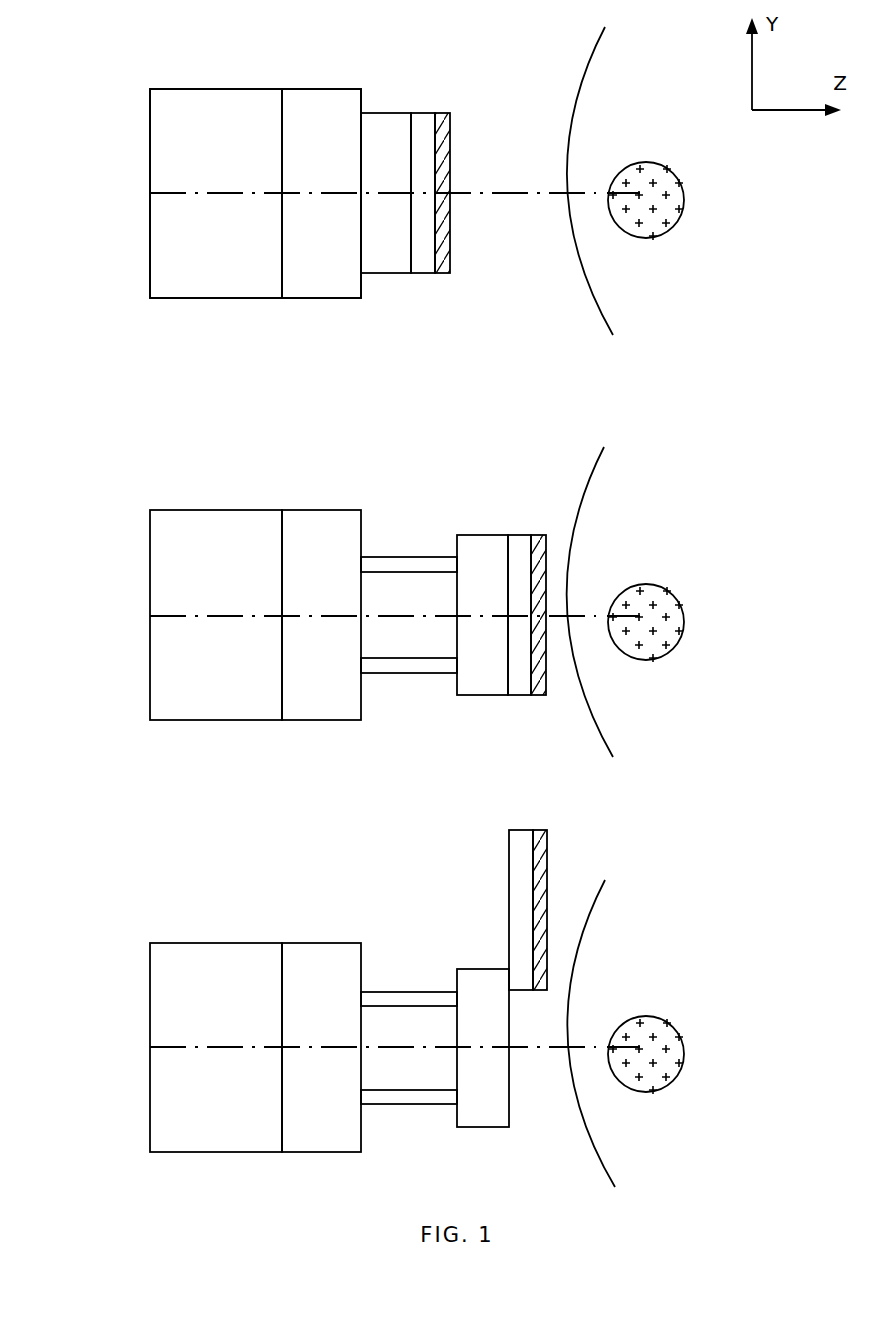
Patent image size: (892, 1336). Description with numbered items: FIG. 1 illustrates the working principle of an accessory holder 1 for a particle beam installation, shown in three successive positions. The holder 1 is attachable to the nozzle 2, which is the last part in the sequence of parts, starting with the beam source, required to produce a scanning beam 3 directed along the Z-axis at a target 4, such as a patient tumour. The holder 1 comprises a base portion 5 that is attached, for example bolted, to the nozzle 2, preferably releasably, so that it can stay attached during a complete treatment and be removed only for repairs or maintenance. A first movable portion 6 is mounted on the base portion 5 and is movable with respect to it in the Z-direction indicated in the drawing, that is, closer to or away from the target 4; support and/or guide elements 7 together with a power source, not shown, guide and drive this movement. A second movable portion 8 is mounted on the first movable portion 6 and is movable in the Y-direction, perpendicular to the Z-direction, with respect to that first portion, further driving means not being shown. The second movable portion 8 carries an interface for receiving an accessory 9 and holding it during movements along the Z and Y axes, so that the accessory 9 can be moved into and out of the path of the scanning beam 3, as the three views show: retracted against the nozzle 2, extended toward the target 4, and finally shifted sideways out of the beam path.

The accessory holder 1 is at (322, 286).
The nozzle 2 is at (182, 137).
The scanning beam 3 is at (496, 200).
The target 4 is at (643, 167).
The base portion 5 is at (325, 115).
The first movable portion 6 is at (386, 142).
The support and/or guide elements 7 is at (433, 560).
The second movable portion 8 is at (425, 123).
The accessory 9 is at (448, 135).